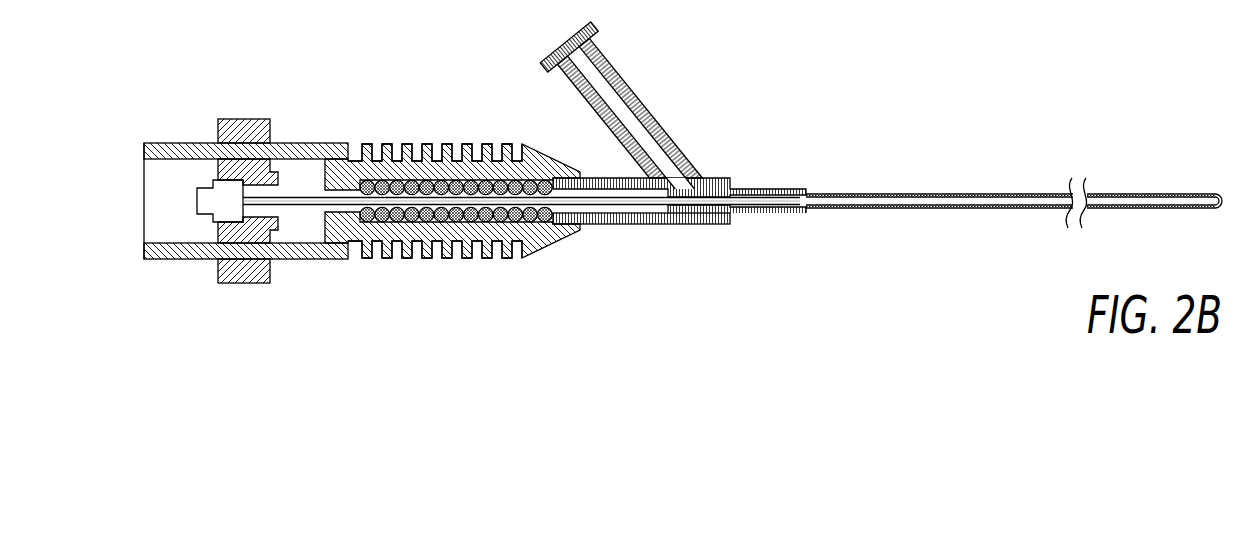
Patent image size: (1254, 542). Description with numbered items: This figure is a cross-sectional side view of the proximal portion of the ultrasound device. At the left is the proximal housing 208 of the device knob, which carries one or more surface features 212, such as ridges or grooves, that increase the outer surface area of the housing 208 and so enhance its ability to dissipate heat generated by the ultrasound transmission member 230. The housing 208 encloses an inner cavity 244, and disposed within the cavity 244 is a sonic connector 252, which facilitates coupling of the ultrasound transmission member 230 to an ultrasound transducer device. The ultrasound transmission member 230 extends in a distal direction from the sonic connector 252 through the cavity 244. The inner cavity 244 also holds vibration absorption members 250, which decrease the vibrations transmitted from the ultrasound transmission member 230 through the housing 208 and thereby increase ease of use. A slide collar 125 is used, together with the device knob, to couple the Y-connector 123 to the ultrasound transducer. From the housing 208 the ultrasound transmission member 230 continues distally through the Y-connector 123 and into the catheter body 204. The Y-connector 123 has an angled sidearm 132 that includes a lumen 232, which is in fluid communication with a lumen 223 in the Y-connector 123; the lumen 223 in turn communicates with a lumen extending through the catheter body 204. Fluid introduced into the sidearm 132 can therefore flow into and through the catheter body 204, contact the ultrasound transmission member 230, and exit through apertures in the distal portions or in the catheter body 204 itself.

The slide collar 125 is at (210, 241).
The inner cavity 244 is at (158, 213).
The sonic connector 252 is at (197, 200).
The ultrasound transmission member 230 is at (302, 198).
The proximal housing 208 is at (434, 204).
The surface features 212 is at (415, 150).
The vibration absorption members 250 is at (397, 180).
The Y-connector 123 is at (673, 182).
The sidearm 132 is at (668, 137).
The lumen 223 is at (660, 208).
The lumen 232 is at (605, 97).
The catheter body 204 is at (952, 193).